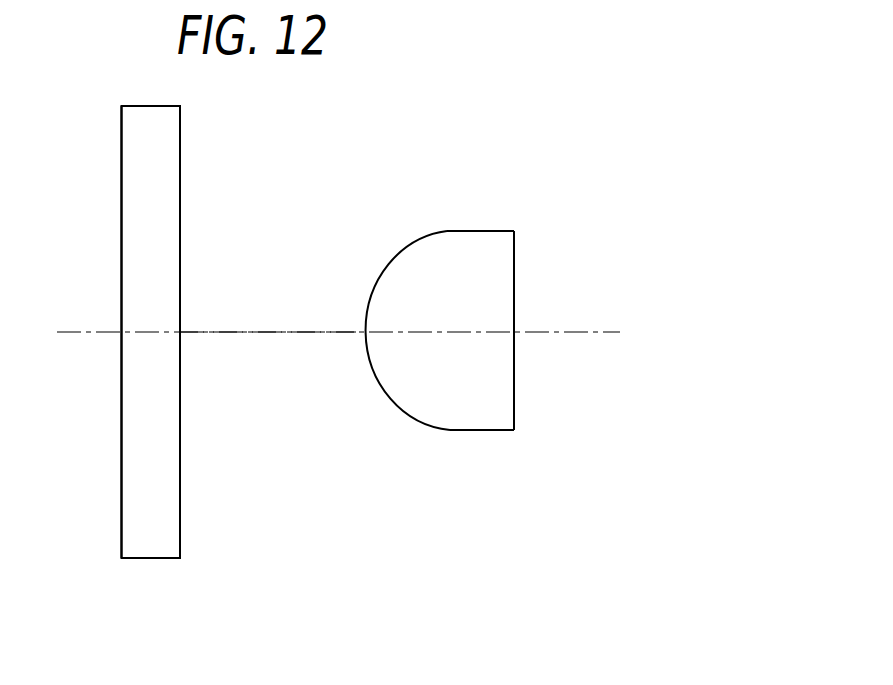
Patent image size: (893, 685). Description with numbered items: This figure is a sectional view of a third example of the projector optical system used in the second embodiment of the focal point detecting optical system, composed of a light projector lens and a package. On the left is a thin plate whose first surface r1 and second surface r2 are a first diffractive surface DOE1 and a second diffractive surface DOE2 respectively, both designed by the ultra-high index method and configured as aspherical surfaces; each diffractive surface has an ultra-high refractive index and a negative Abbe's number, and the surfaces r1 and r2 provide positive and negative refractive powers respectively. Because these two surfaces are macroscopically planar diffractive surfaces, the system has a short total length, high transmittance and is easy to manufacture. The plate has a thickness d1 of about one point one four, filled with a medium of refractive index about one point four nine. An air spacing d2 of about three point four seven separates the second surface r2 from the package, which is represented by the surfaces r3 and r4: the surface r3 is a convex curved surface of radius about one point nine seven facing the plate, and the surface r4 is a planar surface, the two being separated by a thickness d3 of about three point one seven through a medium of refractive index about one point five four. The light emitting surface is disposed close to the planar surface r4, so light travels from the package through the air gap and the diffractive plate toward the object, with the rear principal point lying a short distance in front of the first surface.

The DOE surface 1 DOE1 is at (122, 145).
The DOE surface 2 DOE2 is at (180, 141).
The first surface r1 is at (122, 545).
The second surface r2 is at (180, 535).
The third surface r3 is at (403, 417).
The fourth surface r4 is at (514, 410).
The first thickness d1 is at (145, 332).
The second spacing d2 is at (259, 332).
The third thickness d3 is at (427, 332).